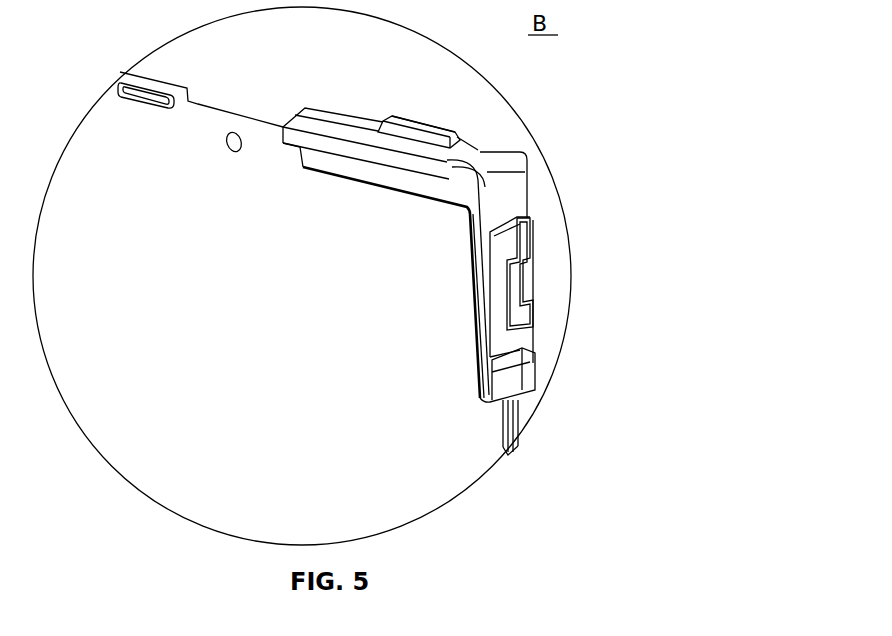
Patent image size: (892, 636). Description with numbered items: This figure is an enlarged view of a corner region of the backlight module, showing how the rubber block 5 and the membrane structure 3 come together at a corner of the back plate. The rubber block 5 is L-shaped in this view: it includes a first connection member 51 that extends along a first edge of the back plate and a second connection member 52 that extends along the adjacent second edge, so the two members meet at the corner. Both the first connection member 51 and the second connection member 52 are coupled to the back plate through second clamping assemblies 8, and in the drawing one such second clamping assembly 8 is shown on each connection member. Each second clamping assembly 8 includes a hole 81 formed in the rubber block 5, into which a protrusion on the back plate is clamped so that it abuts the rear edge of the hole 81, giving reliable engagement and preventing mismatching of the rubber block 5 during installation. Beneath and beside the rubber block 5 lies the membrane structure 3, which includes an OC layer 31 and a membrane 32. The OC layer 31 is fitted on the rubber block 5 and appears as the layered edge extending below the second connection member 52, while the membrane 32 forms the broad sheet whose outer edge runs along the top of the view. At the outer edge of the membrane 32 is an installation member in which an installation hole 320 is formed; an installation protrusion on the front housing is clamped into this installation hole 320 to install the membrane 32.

The membrane structure 3 is at (579, 436).
The OC layer 31 is at (520, 413).
The membrane 32 is at (453, 430).
The installation hole 320 is at (125, 81).
The rubber block 5 is at (472, 245).
The first connection member 51 is at (405, 177).
The second connection member 52 is at (493, 247).
The second clamping assembly 8 is at (519, 209).
The hole 81 is at (433, 133).